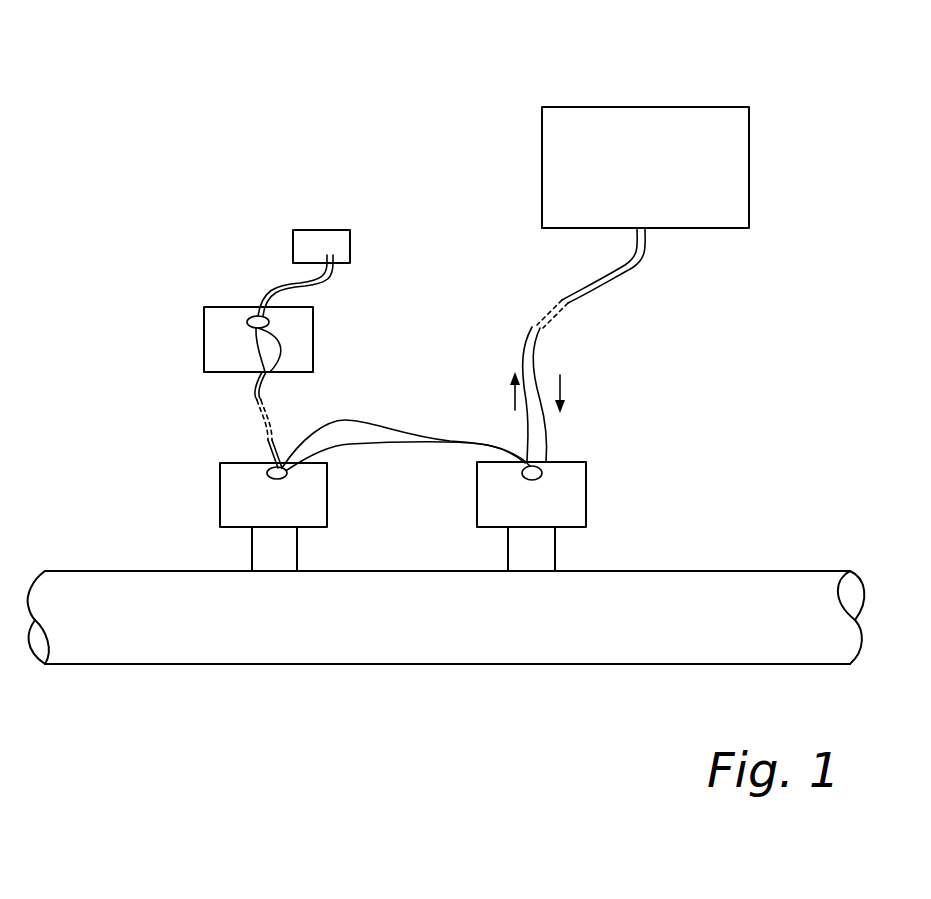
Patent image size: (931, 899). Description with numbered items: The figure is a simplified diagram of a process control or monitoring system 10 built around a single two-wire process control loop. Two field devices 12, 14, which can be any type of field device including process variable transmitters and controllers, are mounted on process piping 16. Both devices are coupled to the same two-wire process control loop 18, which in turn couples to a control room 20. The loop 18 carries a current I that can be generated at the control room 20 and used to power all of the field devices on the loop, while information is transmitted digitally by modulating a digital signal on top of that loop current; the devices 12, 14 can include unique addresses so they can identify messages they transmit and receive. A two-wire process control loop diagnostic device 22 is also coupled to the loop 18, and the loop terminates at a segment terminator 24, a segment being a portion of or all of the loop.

The process control or monitoring system 10 is at (220, 86).
The field device 12 is at (586, 490).
The field device 14 is at (327, 480).
The process piping 16 is at (683, 571).
The two-wire process control loop 18 is at (640, 250).
The control room 20 is at (652, 107).
The two-wire process control loop diagnostic device 22 is at (222, 307).
The segment terminator 24 is at (310, 230).